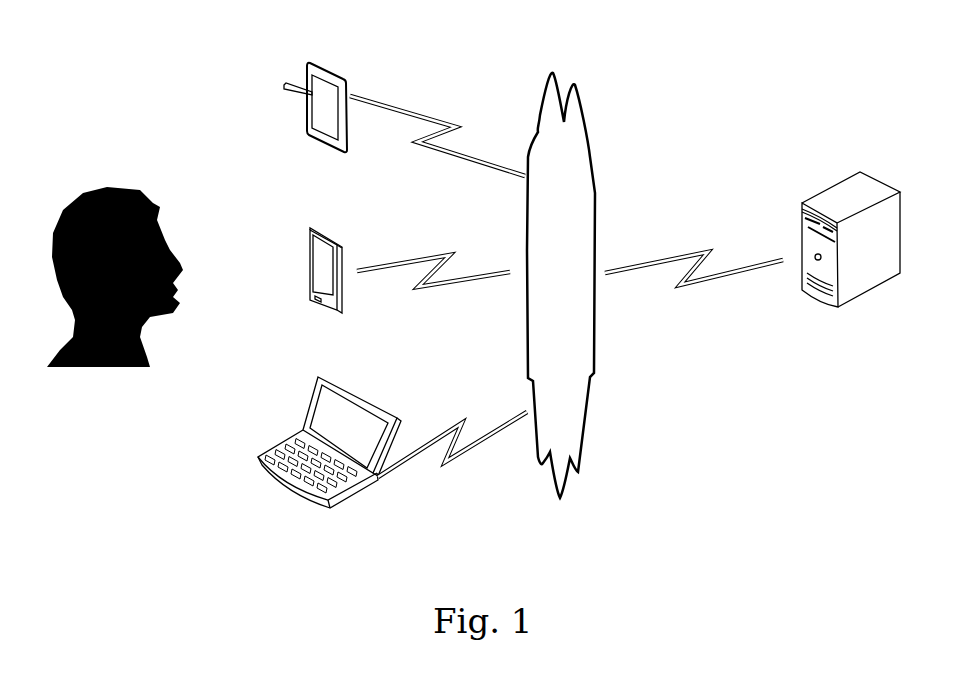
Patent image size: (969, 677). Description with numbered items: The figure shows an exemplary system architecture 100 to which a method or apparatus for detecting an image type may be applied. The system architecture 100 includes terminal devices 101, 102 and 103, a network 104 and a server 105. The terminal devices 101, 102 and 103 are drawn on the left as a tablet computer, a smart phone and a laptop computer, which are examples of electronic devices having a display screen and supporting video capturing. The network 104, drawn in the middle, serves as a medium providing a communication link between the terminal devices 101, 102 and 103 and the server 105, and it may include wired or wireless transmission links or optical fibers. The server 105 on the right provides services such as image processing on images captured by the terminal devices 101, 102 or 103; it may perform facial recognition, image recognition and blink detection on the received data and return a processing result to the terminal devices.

The system architecture 100 is at (842, 27).
The terminal device 101 is at (337, 72).
The terminal device 102 is at (343, 257).
The terminal device 103 is at (350, 392).
The network 104 is at (597, 202).
The server 105 is at (808, 297).